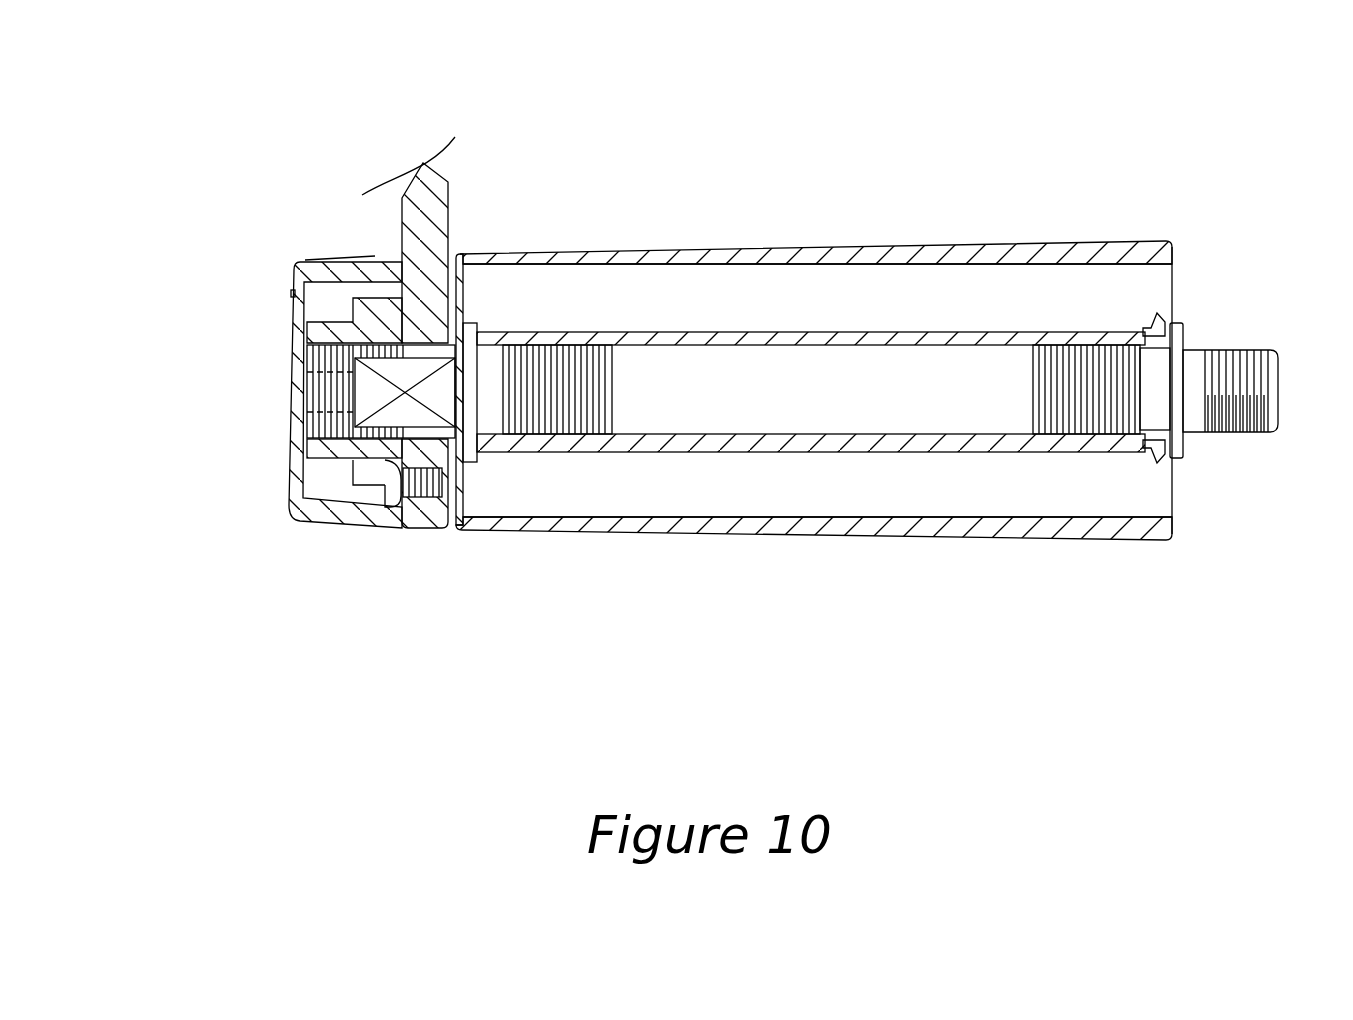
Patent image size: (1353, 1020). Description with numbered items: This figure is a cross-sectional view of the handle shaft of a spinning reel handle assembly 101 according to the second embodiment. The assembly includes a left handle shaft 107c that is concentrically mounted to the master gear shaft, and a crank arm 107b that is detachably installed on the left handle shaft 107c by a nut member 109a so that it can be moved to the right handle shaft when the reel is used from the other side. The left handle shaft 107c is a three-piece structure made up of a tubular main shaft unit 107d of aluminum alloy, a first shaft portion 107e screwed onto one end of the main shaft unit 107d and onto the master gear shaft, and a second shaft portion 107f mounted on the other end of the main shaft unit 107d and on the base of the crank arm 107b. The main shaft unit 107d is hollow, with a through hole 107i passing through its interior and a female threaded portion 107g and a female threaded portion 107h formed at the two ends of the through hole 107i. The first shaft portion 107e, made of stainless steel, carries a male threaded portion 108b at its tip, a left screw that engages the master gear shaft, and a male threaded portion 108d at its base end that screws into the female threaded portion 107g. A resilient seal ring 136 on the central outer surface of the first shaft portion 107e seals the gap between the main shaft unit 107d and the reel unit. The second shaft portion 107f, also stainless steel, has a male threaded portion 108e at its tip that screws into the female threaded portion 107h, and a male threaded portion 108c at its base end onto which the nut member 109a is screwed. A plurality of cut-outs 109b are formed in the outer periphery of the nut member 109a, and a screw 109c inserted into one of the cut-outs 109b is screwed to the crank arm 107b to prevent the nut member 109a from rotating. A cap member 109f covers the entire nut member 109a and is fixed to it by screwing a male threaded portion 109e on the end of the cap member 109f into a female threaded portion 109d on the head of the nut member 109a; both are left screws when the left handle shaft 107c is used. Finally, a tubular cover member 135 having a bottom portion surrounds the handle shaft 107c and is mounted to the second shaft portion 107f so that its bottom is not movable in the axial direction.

The handle assembly 101 is at (593, 135).
The cover member 135 is at (980, 228).
The seal ring 136 is at (1157, 463).
The crank arm 107b is at (428, 218).
The left handle shaft 107c is at (853, 320).
The main shaft unit 107d is at (785, 453).
The first shaft portion 107e is at (1112, 462).
The second shaft portion 107f is at (503, 482).
The female threaded portion 107g is at (1062, 357).
The female threaded portion 107h is at (595, 352).
The through hole 107i is at (795, 365).
The male threaded portion 108b is at (1237, 348).
The male threaded portion 108c is at (362, 345).
The male threaded portion 108d is at (1110, 355).
The male threaded portion 108e is at (540, 353).
The nut member 109a is at (362, 322).
The cut-outs 109b is at (308, 522).
The screw 109c is at (385, 506).
The female threaded portion 109d is at (332, 363).
The male threaded portion 109e is at (332, 396).
The cap member 109f is at (255, 380).